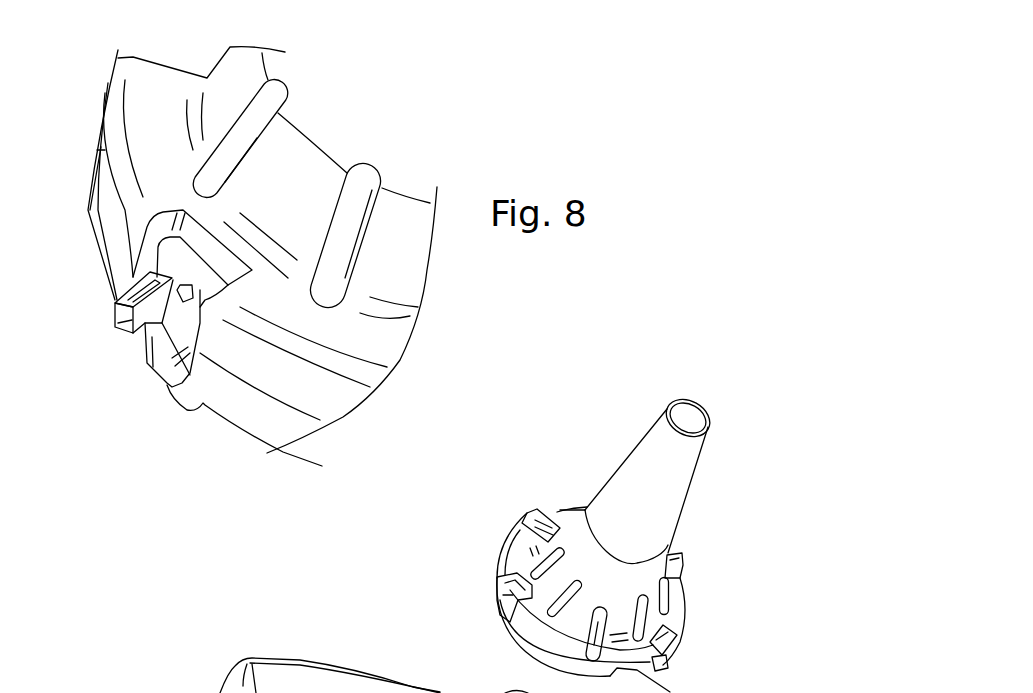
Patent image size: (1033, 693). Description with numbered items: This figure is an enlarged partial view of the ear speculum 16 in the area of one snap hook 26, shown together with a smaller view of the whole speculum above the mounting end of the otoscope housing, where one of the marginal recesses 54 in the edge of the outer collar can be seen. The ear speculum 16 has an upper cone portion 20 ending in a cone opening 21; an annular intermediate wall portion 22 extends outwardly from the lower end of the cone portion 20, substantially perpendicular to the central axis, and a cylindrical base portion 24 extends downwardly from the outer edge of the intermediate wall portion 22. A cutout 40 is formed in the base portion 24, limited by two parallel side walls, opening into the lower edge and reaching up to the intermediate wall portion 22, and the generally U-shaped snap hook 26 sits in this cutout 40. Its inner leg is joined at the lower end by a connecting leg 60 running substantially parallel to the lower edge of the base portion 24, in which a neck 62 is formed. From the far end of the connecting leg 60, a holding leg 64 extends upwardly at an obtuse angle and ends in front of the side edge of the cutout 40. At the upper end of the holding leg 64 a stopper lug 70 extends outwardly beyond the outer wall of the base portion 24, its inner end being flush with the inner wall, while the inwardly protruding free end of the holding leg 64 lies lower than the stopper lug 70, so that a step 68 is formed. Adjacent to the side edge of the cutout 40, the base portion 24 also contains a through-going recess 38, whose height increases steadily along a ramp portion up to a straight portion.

The ear speculum 16 is at (408, 193).
The upper cone portion 20 is at (663, 490).
The cone opening 21 is at (688, 417).
The annular intermediate wall portion 22 is at (157, 117).
The cylindrical base portion 24 is at (317, 393).
The snap hook 26 is at (148, 368).
The through-going recess 38 is at (100, 242).
The cutout 40 is at (500, 577).
The marginal recess 54 is at (210, 692).
The connecting leg 60 is at (167, 387).
The neck 62 is at (170, 390).
The holding leg 64 is at (145, 366).
The step 68 is at (185, 285).
The stopper lug 70 is at (115, 315).